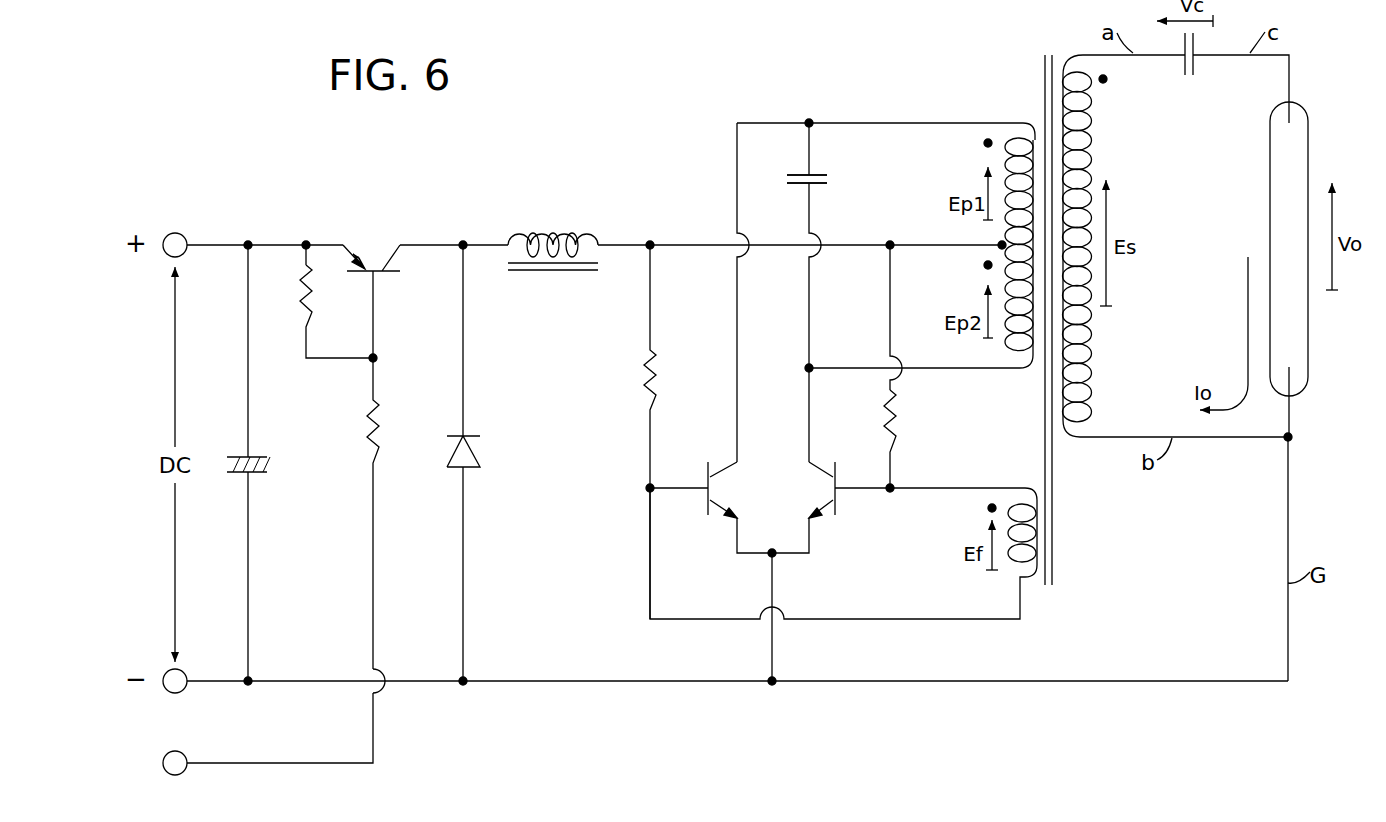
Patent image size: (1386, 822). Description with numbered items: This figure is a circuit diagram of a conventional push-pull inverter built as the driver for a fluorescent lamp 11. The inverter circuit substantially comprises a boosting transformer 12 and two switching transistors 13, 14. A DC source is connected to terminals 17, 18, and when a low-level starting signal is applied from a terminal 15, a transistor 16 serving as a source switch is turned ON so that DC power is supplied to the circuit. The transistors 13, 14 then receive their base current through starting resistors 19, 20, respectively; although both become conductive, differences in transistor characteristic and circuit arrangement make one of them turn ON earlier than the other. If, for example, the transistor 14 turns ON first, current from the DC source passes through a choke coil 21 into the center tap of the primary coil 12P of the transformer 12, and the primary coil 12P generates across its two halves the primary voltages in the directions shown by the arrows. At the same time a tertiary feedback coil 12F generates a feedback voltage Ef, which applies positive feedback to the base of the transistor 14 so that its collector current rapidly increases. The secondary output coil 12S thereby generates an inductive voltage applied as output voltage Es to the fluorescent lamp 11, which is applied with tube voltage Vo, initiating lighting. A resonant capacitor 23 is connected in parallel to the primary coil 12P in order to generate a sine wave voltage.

The fluorescent lamp 11 is at (1307, 148).
The boosting transformer 12 is at (1042, 70).
The primary coil 12P is at (1015, 138).
The secondary coil 12S is at (1092, 95).
The tertiary coil 12F is at (1028, 580).
The switching transistor 13 is at (705, 508).
The switching transistor 14 is at (838, 508).
The terminal 15 is at (165, 773).
The transistor 16 is at (372, 243).
The terminal 17 is at (166, 236).
The terminal 18 is at (165, 691).
The starting resistor 19 is at (642, 375).
The starting resistor 20 is at (893, 435).
The choke coil 21 is at (563, 225).
The resonant capacitor 23 is at (827, 182).